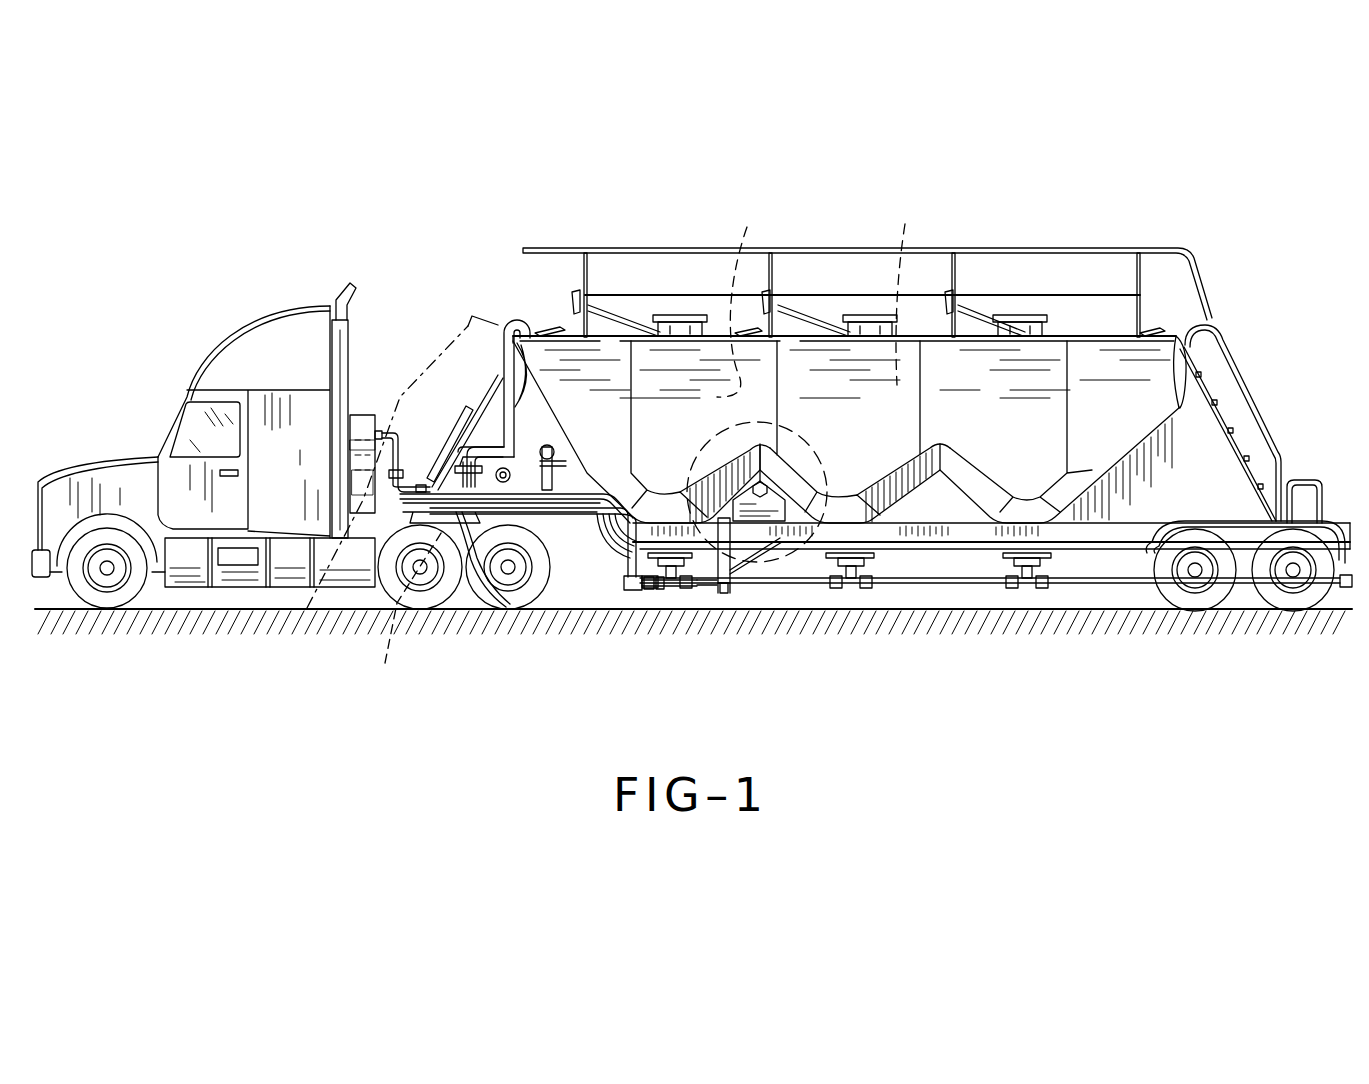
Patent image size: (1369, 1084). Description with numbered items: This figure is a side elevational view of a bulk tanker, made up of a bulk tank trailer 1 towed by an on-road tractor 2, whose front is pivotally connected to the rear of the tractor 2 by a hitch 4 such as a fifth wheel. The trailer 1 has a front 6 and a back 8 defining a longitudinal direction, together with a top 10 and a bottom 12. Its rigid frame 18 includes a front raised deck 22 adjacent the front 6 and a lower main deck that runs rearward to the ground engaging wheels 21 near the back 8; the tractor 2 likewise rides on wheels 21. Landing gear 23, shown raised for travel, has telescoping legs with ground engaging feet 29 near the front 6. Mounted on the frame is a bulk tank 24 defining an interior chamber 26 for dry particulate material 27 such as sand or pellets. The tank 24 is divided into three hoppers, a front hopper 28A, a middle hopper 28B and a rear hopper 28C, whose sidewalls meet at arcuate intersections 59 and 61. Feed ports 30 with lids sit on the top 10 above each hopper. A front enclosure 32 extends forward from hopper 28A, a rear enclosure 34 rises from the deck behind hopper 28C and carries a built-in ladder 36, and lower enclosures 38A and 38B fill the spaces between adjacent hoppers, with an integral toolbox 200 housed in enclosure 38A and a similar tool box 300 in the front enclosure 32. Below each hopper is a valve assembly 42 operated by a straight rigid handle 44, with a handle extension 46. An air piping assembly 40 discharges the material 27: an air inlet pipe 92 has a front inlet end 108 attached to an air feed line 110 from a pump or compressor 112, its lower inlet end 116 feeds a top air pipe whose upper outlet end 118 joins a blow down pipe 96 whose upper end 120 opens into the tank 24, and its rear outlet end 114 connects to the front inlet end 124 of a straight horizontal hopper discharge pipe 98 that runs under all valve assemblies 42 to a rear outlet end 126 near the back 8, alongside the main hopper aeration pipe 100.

The bulk tank trailer 1 is at (1105, 212).
The tractor 2 is at (196, 357).
The hitch 4 is at (411, 609).
The front 6 is at (386, 497).
The back 8 is at (514, 337).
The top 10 is at (810, 322).
The bottom 12 is at (1131, 608).
The rigid frame 18 is at (1088, 545).
The ground engaging wheels 21 is at (105, 605).
The front raised deck 22 is at (557, 517).
The landing gear 23 is at (718, 594).
The bulk tank 24 is at (550, 326).
The interior bulk storage chamber 26 is at (738, 299).
The dry particulate material 27 is at (905, 291).
The front hopper 28A is at (700, 429).
The middle hopper 28B is at (860, 428).
The rear hopper 28C is at (1006, 426).
The ground engaging foot 29 is at (720, 634).
The hopper feed ports 30 is at (677, 312).
The front enclosure 32 is at (441, 436).
The rear enclosure 34 is at (1228, 438).
The built-in ladder 36 is at (1216, 402).
The first lower enclosure 38A is at (797, 498).
The second lower enclosure 38B is at (965, 500).
The air piping assembly 40 is at (927, 586).
The valve assembly 42 is at (653, 592).
The valve control handle 44 is at (682, 590).
The handle extension 46 is at (847, 572).
The intersection 59 is at (758, 452).
The intersection 61 is at (917, 456).
The air inlet pipe 92 is at (572, 487).
The blow down pipe 96 is at (474, 380).
The hopper discharge pipe 98 is at (707, 582).
The hopper aeration pipe 100 is at (792, 560).
The front inlet end 108 is at (400, 432).
The air feed line 110 is at (362, 468).
The air pump or compressor 112 is at (360, 472).
The rear lower outlet end 114 is at (624, 582).
The lower inlet end 116 is at (483, 593).
The upper outlet end 118 is at (511, 447).
The upper end 120 is at (519, 322).
The front inlet end 124 is at (622, 585).
The rear outlet end 126 is at (1348, 600).
The integral toolbox 200 is at (736, 481).
The integral tool box 300 is at (405, 405).